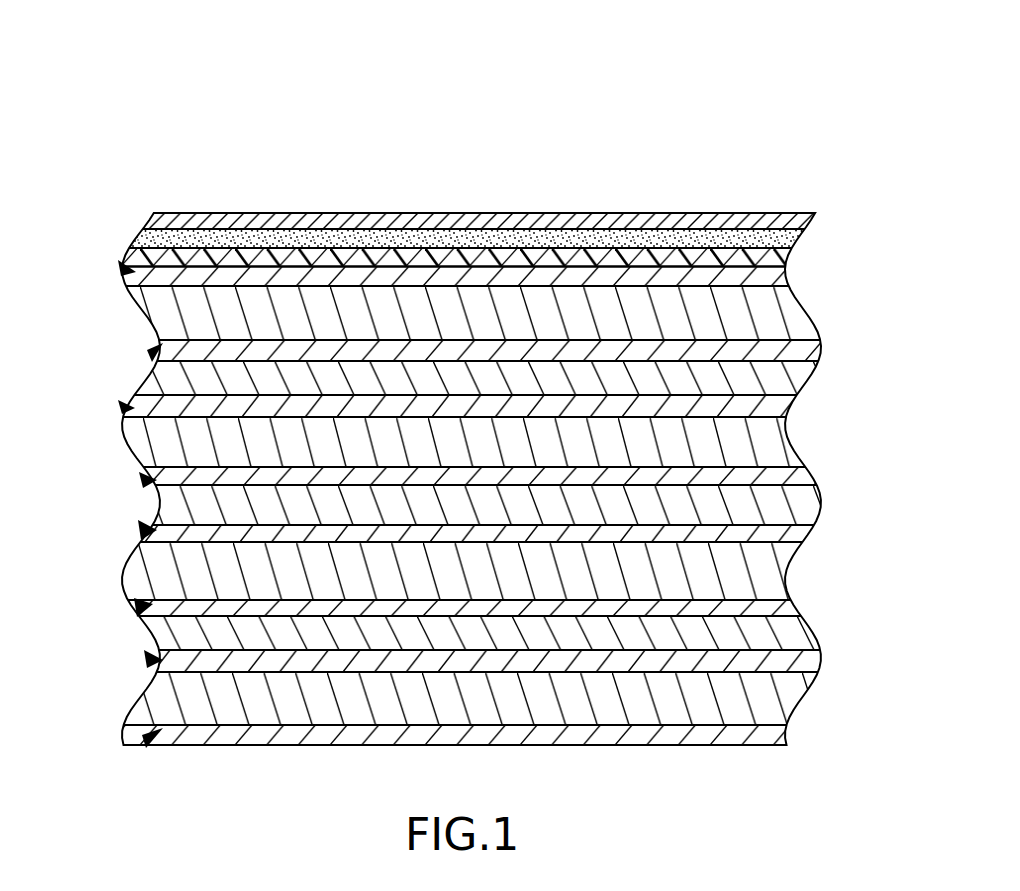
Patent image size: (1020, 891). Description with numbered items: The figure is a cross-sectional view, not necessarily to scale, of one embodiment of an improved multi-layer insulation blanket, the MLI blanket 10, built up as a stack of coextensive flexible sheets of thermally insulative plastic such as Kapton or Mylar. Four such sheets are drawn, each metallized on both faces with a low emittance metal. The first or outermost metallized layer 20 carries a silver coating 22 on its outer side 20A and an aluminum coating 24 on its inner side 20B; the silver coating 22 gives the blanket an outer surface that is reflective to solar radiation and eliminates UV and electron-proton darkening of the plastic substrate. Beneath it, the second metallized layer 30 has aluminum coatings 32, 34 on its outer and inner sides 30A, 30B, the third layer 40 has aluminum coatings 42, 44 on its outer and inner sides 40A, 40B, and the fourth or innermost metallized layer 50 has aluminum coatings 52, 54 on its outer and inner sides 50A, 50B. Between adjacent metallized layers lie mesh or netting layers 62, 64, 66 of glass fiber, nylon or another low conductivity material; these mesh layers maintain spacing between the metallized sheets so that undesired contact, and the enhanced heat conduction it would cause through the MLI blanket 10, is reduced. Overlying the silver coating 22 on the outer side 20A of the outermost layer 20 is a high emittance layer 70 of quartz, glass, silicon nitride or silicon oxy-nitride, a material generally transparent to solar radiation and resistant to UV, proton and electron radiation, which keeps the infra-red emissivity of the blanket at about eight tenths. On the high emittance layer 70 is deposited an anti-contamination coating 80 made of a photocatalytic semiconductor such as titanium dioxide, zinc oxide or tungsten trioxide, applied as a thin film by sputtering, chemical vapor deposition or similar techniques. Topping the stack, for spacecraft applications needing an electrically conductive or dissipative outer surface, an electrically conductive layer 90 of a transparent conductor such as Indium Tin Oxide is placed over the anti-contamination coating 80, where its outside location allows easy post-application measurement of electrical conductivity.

The MLI blanket 10 is at (457, 126).
The electrically conductive layer 90 is at (736, 222).
The anti-contamination coating 80 is at (810, 232).
The high emittance layer 70 is at (786, 262).
The silver coating 22 is at (772, 277).
The first or outermost metallized layer 20 is at (780, 314).
The aluminum coating 24 is at (810, 348).
The mesh layer 62 is at (782, 377).
The aluminum coating 32 is at (777, 403).
The second metallized layer 30 is at (770, 440).
The aluminum coating 34 is at (785, 473).
The mesh layer 64 is at (792, 505).
The aluminum coating 42 is at (793, 532).
The third layer 40 is at (770, 570).
The aluminum coating 44 is at (787, 605).
The mesh layer 66 is at (792, 632).
The aluminum coating 52 is at (800, 658).
The fourth or innermost metallized layer 50 is at (778, 698).
The aluminum coating 54 is at (773, 735).
The outer side of sheet 20 20A is at (120, 267).
The inner side of sheet 20 20B is at (150, 352).
The outer side of sheet 30 30A is at (120, 404).
The inner side of sheet 30 30B is at (141, 479).
The outer side of sheet 40 40A is at (140, 527).
The inner side of sheet 40 40B is at (136, 606).
The outer side of sheet 50 50A is at (146, 656).
The inner side of sheet 50 50B is at (144, 741).